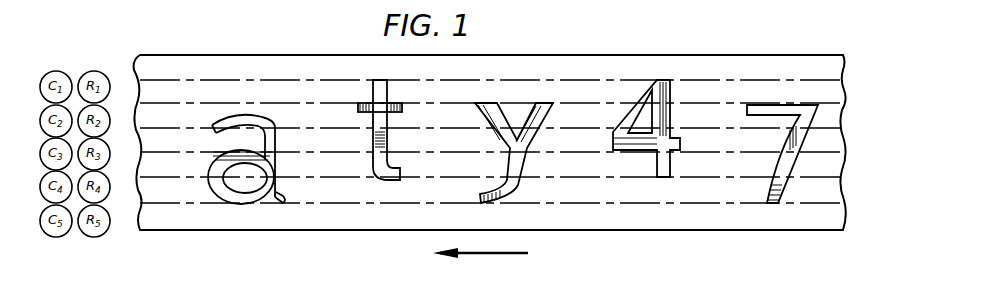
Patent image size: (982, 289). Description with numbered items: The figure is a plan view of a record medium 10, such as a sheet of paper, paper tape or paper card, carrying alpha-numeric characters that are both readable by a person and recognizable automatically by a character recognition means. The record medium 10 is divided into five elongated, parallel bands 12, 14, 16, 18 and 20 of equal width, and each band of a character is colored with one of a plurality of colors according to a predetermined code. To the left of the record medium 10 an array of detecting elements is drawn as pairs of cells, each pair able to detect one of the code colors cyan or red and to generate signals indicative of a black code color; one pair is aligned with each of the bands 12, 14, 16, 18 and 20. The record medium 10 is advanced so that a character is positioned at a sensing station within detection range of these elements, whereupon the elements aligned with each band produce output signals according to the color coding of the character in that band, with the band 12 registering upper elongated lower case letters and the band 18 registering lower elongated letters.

The record medium 10 is at (212, 55).
The band 12 is at (847, 97).
The band 14 is at (847, 123).
The band 16 is at (847, 148).
The band 18 is at (847, 173).
The band 20 is at (847, 198).